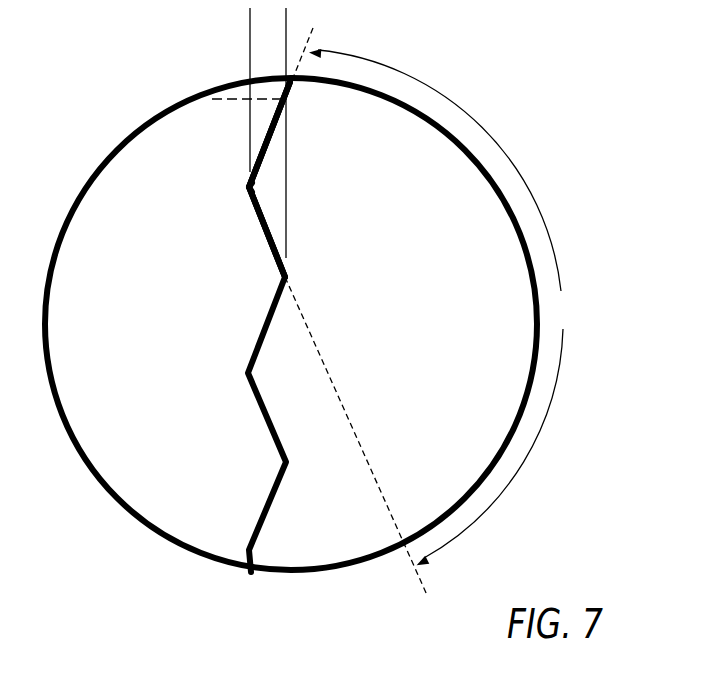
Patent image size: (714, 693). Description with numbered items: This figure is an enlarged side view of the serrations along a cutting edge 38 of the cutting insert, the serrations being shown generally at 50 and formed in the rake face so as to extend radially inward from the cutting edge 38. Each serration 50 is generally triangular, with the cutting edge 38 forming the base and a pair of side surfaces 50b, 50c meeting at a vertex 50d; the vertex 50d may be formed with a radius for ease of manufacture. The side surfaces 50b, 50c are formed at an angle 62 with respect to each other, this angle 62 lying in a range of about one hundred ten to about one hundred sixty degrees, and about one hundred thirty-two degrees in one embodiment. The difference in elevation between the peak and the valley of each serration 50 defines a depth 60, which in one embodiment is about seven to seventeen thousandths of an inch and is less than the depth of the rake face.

The cutting edge 38 is at (270, 332).
The serration 50 is at (337, 181).
The side surface 50b is at (273, 142).
The side surface 50c is at (270, 235).
The vertex 50d is at (252, 187).
The depth 60 is at (326, 19).
The angle 62 is at (444, 307).